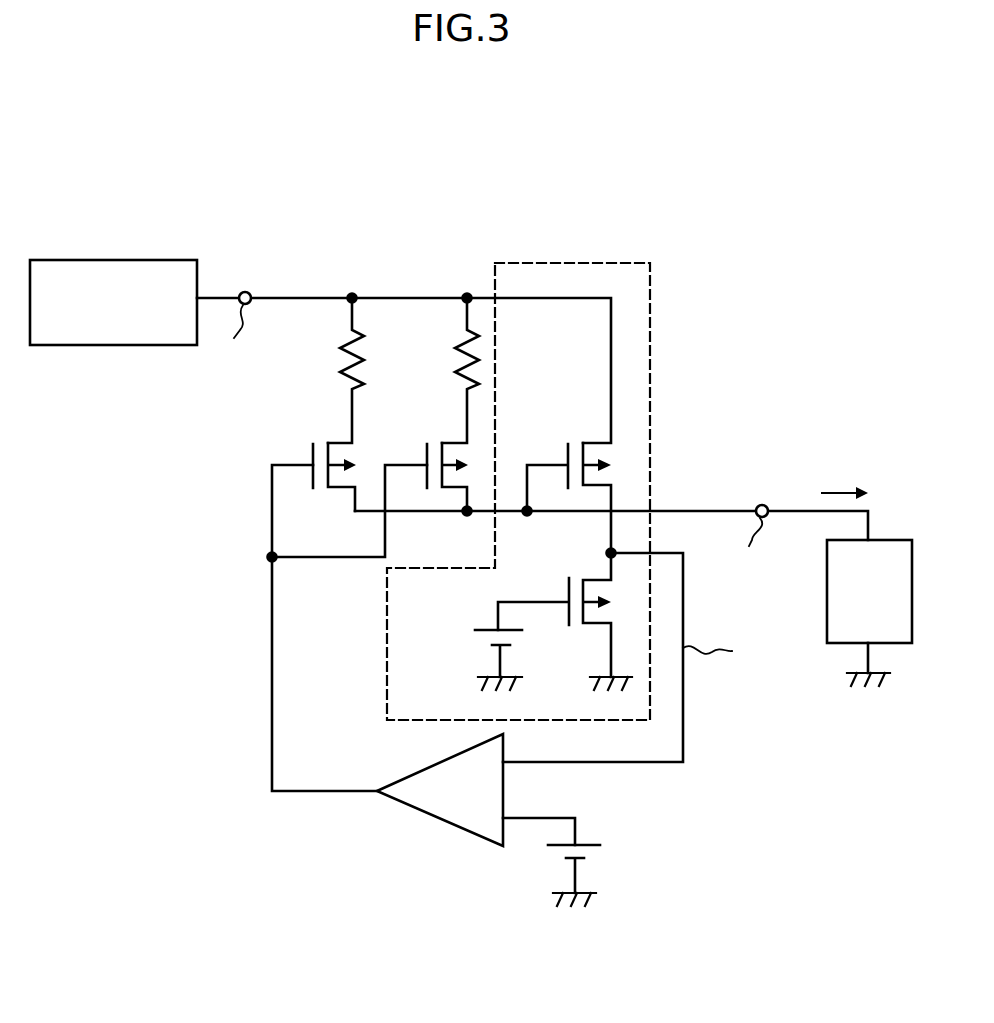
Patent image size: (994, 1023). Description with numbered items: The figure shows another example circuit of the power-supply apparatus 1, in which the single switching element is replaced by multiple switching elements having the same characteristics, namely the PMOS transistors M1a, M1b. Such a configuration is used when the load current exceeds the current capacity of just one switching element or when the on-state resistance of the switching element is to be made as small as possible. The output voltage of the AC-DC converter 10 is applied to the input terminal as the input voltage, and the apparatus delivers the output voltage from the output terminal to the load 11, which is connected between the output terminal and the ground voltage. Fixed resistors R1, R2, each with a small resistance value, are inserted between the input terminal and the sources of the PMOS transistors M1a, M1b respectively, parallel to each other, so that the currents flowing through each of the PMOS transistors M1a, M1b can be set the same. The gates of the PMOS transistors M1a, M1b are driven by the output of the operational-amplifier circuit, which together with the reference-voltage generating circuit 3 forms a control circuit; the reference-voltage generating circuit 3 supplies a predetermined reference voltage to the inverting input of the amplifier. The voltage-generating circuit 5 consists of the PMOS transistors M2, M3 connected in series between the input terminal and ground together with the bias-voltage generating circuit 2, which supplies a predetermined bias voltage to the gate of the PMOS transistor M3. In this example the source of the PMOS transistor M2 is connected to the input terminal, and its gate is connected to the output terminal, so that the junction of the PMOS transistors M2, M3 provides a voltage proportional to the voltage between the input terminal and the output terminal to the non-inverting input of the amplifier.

The power-supply apparatus 1 is at (531, 192).
The bias-voltage generating circuit 2 is at (514, 636).
The reference-voltage generating circuit 3 is at (596, 852).
The voltage-generating circuit 5 is at (606, 282).
The AC-DC converter 10 is at (112, 260).
The load 11 is at (884, 540).
The fixed resistor R1 is at (330, 370).
The fixed resistor R2 is at (445, 370).
The PMOS transistor M1a is at (323, 461).
The PMOS transistor M1b is at (436, 461).
The PMOS transistor M2 is at (569, 482).
The PMOS transistor M3 is at (565, 621).